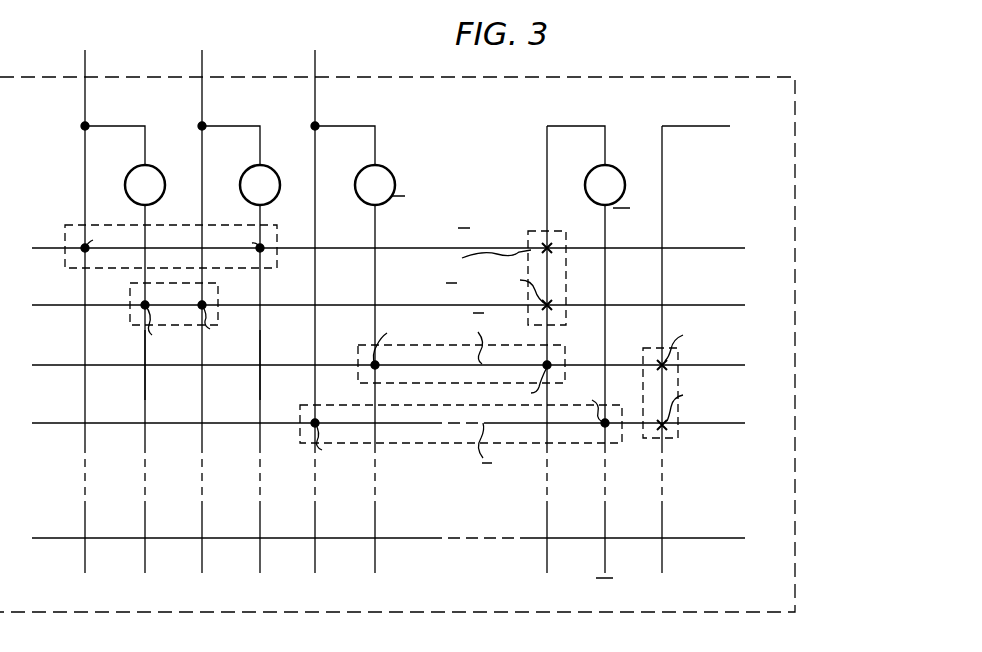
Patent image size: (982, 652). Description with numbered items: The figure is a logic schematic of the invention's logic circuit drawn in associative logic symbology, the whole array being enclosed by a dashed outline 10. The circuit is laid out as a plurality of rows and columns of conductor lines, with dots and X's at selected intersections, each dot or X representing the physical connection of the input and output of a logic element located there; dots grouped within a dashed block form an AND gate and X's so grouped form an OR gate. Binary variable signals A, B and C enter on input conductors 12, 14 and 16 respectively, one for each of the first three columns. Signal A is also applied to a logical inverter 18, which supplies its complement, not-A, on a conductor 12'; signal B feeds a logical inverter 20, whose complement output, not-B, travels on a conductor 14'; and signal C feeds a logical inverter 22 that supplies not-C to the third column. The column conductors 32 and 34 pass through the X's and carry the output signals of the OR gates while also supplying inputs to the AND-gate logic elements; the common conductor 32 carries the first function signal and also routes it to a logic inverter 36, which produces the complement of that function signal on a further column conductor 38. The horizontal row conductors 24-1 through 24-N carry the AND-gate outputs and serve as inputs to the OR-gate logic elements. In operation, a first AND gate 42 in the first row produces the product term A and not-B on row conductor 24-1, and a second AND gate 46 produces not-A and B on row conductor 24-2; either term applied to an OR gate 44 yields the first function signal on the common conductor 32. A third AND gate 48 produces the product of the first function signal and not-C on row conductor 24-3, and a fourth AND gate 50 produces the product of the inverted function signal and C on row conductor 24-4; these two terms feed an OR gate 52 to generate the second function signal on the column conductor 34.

The memory matrix assembly 10 is at (795, 283).
The input conductor 12 is at (98, 302).
The input conductor 14 is at (216, 302).
The input conductor 16 is at (315, 108).
The logical inverter 18 is at (160, 170).
The logical inverter 20 is at (275, 170).
The logical inverter 22 is at (390, 170).
The common conductor 32 is at (547, 162).
The conductor 34 is at (662, 166).
The logic inverter 36 is at (622, 168).
The f1-bar column line 38 is at (605, 285).
The AND gate 42 is at (67, 225).
The OR gate 44 is at (523, 231).
The AND gate 46 is at (131, 321).
The AND gate 48 is at (358, 345).
The AND gate 50 is at (450, 443).
The OR gate 52 is at (678, 438).
The conductor 12' is at (165, 367).
The conductor 14' is at (279, 365).
The row conductor 24-1 is at (396, 249).
The row conductor 24-2 is at (396, 306).
The row conductor 24-3 is at (396, 366).
The row conductor 24-4 is at (396, 424).
The row conductor 24-N is at (396, 539).